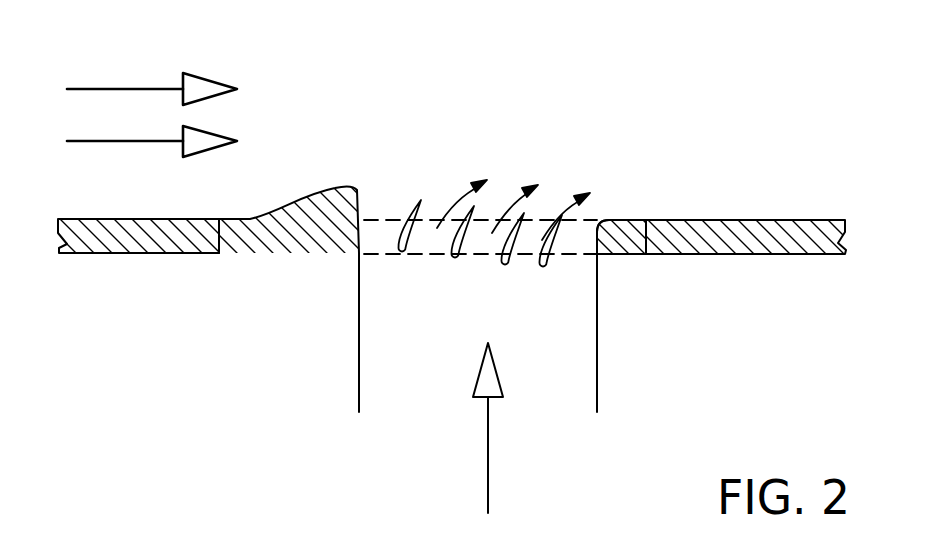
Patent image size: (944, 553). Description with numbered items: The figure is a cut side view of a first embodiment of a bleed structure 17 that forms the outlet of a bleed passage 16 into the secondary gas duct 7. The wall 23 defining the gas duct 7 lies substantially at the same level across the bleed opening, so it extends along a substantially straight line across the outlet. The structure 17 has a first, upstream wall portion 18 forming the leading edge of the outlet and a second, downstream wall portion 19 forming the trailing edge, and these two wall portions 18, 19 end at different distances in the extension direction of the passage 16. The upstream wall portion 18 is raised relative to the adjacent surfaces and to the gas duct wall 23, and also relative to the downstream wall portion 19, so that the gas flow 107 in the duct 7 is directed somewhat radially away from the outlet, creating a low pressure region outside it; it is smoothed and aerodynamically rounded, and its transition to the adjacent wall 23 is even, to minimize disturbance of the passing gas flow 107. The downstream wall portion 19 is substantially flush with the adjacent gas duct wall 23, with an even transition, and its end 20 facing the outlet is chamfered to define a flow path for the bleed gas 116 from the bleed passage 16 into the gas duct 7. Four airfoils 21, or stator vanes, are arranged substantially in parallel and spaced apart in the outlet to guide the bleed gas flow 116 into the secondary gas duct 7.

The gas flow 107 is at (122, 89).
The secondary gas duct 7 is at (154, 197).
The gas duct wall 23 is at (188, 218).
The upstream wall portion 18 is at (333, 195).
The airfoils 21 is at (453, 257).
The bleed structure 17 is at (520, 112).
The downstream wall portion 19 is at (630, 222).
The end of the downstream wall portion 20 is at (612, 223).
The bleed passage 16 is at (598, 337).
The bleed gas flow 116 is at (490, 452).